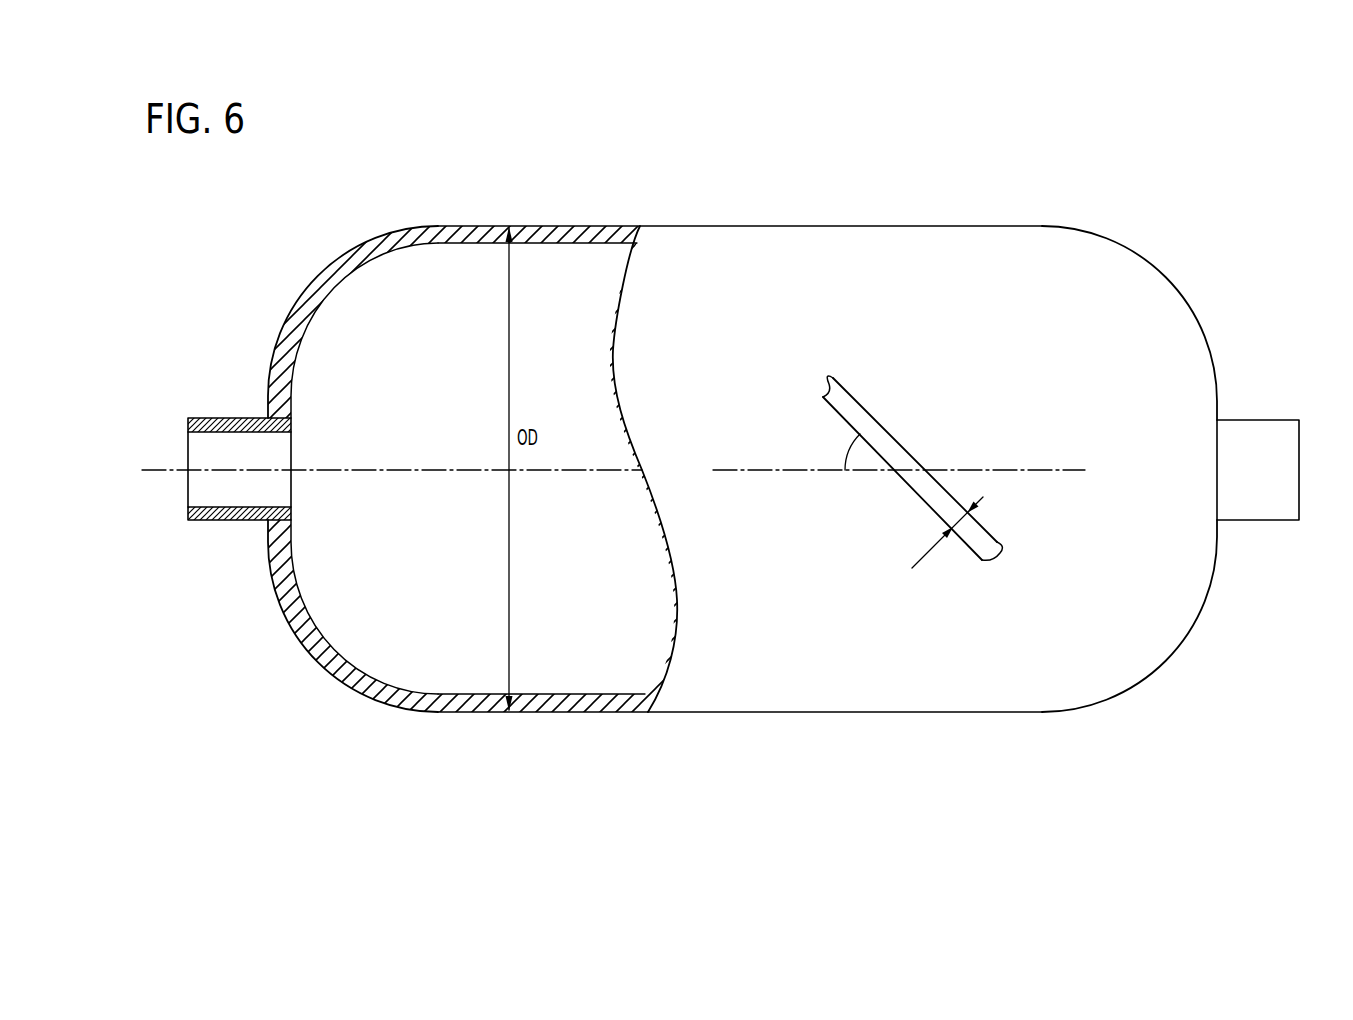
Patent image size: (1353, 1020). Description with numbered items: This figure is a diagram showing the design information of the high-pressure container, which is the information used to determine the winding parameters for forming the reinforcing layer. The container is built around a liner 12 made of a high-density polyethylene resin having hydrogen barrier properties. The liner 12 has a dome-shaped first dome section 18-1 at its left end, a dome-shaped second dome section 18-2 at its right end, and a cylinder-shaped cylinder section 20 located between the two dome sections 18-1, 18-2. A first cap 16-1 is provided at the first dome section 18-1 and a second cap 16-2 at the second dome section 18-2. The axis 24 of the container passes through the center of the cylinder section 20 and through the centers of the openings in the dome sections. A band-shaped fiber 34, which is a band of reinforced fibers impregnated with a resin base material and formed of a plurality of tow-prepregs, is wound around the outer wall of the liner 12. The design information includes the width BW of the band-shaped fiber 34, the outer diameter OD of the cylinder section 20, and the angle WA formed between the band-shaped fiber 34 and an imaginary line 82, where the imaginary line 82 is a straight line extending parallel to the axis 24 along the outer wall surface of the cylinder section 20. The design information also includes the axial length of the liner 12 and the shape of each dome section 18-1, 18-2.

The liner 12 is at (758, 226).
The first cap 16-1 is at (207, 418).
The second cap 16-2 is at (1280, 420).
The first dome section 18-1 is at (310, 663).
The second dome section 18-2 is at (1178, 662).
The cylinder section 20 is at (865, 713).
The axis 24 is at (153, 470).
The band-shaped fiber 34 is at (848, 393).
The imaginary line 82 is at (982, 470).